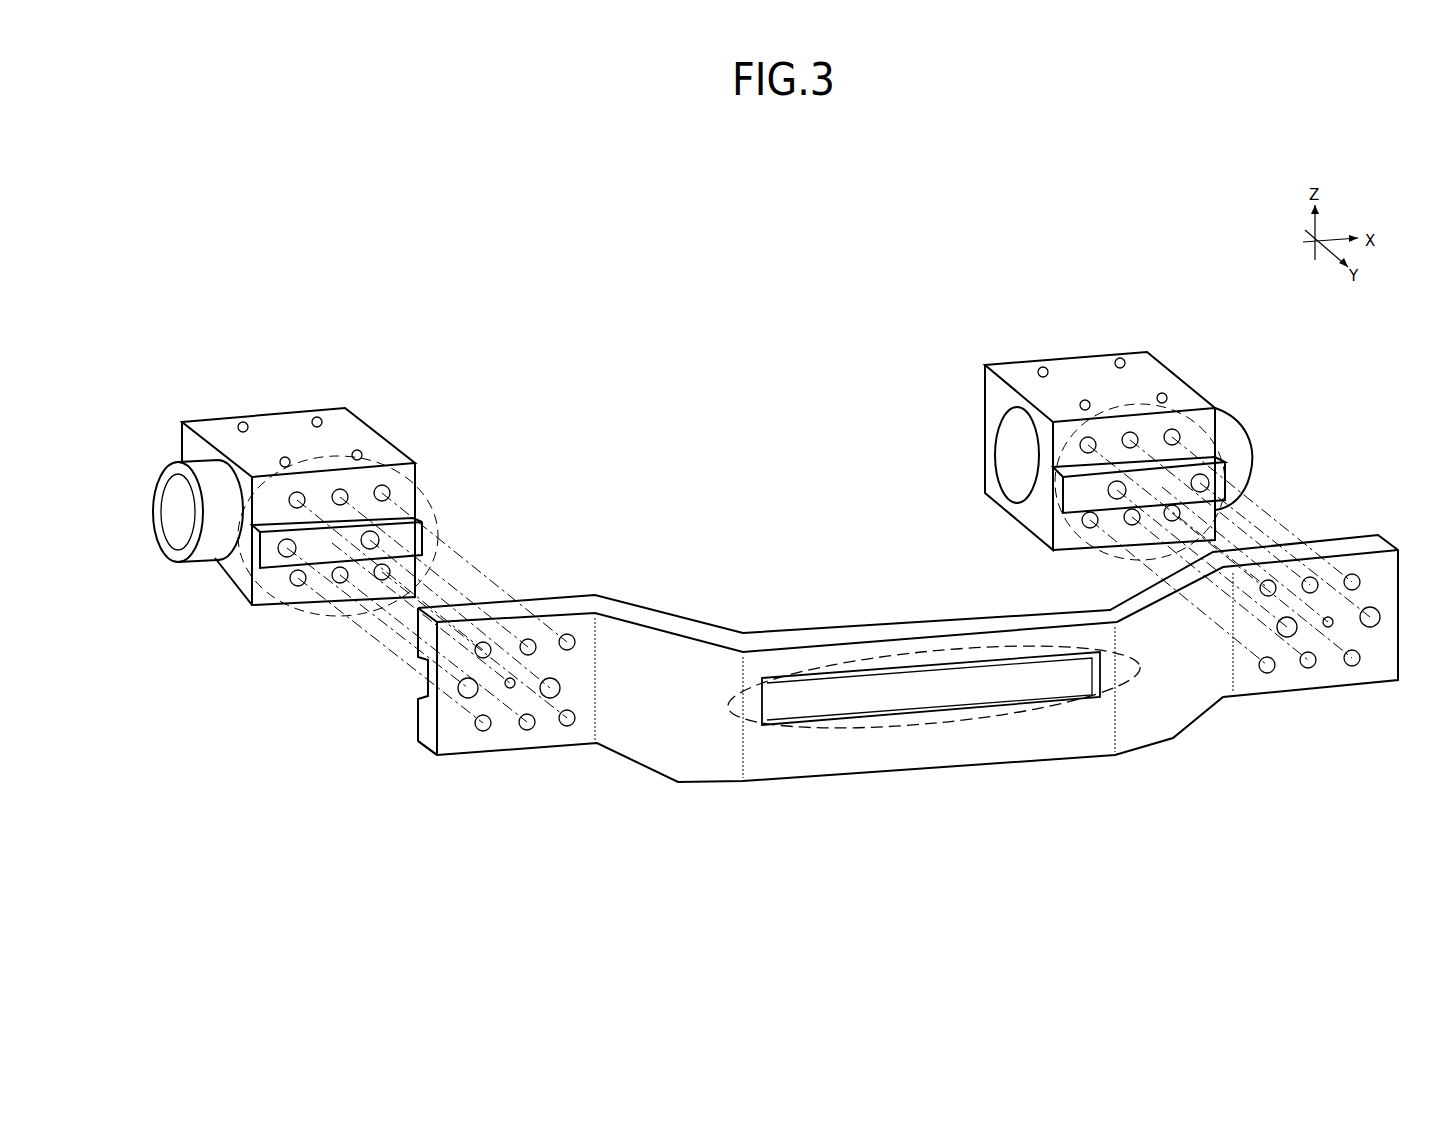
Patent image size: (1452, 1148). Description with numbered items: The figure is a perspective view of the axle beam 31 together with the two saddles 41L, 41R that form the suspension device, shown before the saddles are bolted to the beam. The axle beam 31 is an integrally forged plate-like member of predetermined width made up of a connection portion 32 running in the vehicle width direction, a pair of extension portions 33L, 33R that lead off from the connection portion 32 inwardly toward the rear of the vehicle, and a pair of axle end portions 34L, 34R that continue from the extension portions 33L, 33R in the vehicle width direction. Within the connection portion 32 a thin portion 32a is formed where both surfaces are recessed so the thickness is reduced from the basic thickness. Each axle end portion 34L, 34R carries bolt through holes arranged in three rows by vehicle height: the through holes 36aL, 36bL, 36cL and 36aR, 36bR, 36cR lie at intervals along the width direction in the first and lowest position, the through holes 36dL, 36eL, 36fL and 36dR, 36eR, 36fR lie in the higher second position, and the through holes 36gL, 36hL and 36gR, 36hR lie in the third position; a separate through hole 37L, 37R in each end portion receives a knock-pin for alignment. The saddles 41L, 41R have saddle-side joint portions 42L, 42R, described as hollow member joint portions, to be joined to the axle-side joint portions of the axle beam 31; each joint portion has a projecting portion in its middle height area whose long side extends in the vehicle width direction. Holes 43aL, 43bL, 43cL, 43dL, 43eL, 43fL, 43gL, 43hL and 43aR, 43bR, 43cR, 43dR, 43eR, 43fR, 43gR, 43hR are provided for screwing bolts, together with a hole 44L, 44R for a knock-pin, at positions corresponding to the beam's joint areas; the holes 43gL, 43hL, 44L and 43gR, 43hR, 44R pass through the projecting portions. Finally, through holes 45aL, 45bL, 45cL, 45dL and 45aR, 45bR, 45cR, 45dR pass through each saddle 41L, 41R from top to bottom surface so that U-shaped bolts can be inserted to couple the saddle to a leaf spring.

The axle beam 31 is at (972, 800).
The connection portion 32 is at (978, 740).
The thin portion 32a is at (875, 660).
The extension portion 33R is at (665, 715).
The extension portion 33L is at (1143, 677).
The axle end portion 34R is at (425, 740).
The axle end portion 34L is at (1247, 643).
The through hole 36aR is at (482, 728).
The through hole 36bR is at (527, 728).
The through hole 36cR is at (567, 727).
The through hole 36dR is at (483, 650).
The through hole 36eR is at (528, 647).
The through hole 36fR is at (567, 642).
The through hole 36gR is at (468, 688).
The through hole 36hR is at (550, 688).
The through hole 37R is at (510, 683).
The through hole 36aL is at (1352, 658).
The through hole 36bL is at (1308, 660).
The through hole 36cL is at (1267, 665).
The through hole 36dL is at (1352, 582).
The through hole 36eL is at (1310, 585).
The through hole 36fL is at (1268, 588).
The through hole 36gL is at (1374, 617).
The through hole 36hL is at (1287, 627).
The through hole 37L is at (1328, 622).
The saddle 41R is at (293, 415).
The saddle 41L is at (1097, 375).
The saddle-side joint portion 42R is at (237, 596).
The saddle-side joint portion 42L is at (1215, 407).
The hole 43aR is at (298, 578).
The hole 43bR is at (342, 575).
The hole 43cR is at (383, 572).
The hole 43dR is at (297, 500).
The hole 43eR is at (340, 497).
The hole 43fR is at (382, 493).
The hole 43gR is at (287, 548).
The hole 43hR is at (370, 540).
The hole 43aL is at (1172, 513).
The hole 43bL is at (1132, 517).
The hole 43cL is at (1090, 520).
The hole 43dL is at (1172, 437).
The hole 43eL is at (1130, 440).
The hole 43fL is at (1088, 445).
The hole 43gL is at (1200, 483).
The hole 43hL is at (1117, 490).
The hole 44R is at (330, 530).
The hole 44L is at (1100, 488).
The through hole 45aR is at (357, 455).
The through hole 45bR is at (285, 462).
The through hole 45cR is at (243, 423).
The through hole 45dR is at (317, 422).
The through hole 45aL is at (1085, 405).
The through hole 45bL is at (1162, 398).
The through hole 45cL is at (1120, 363).
The through hole 45dL is at (1043, 372).